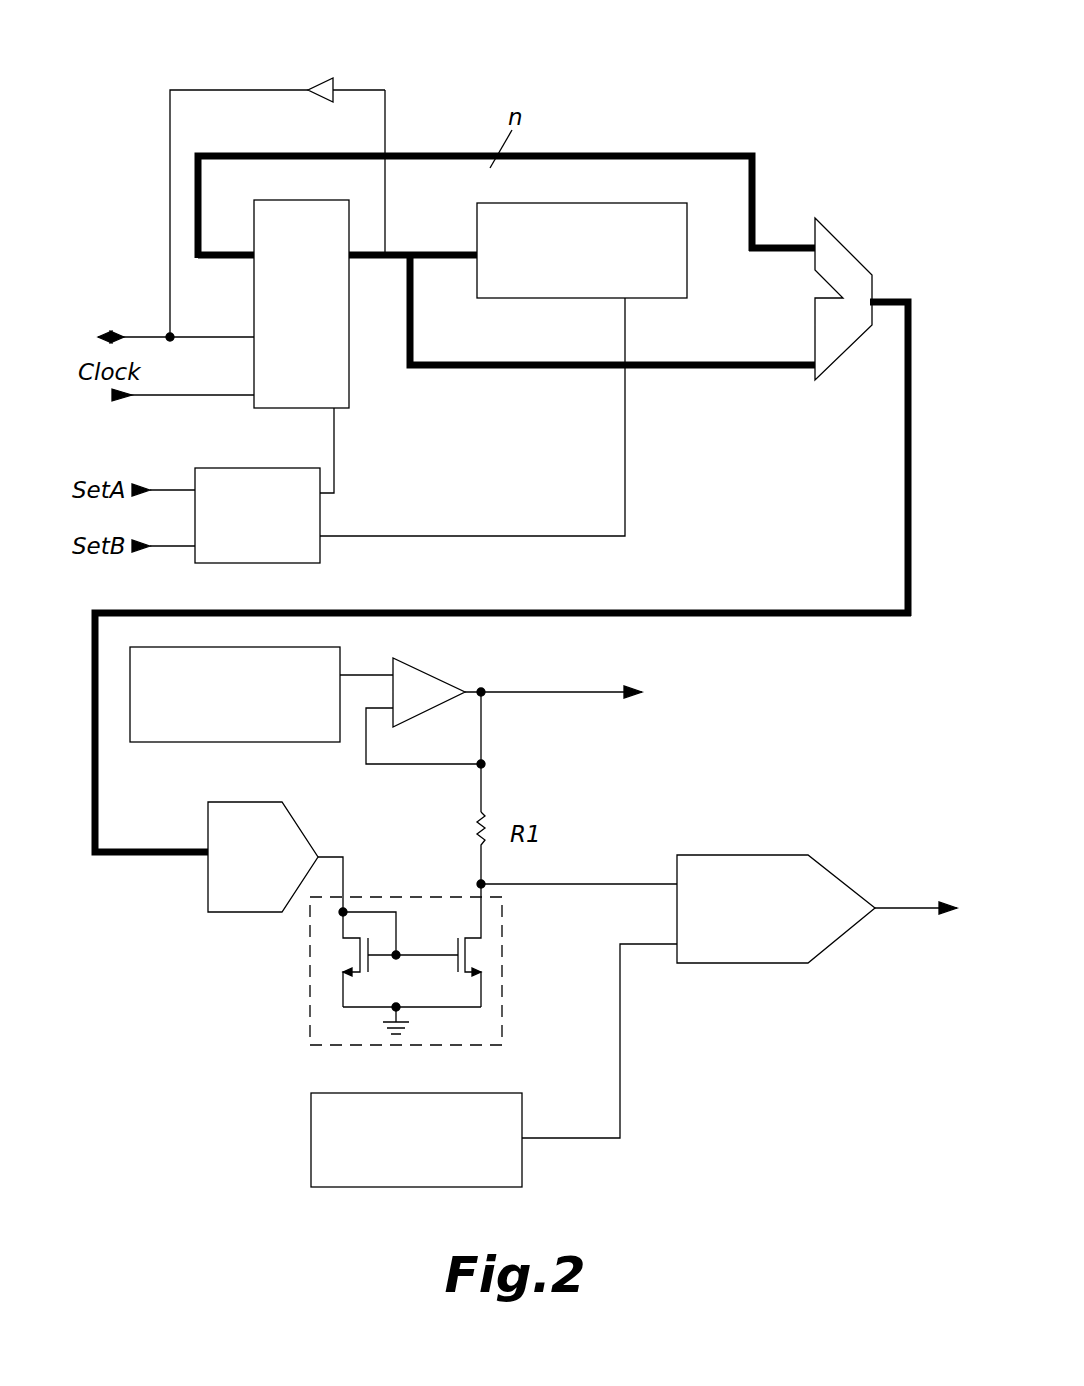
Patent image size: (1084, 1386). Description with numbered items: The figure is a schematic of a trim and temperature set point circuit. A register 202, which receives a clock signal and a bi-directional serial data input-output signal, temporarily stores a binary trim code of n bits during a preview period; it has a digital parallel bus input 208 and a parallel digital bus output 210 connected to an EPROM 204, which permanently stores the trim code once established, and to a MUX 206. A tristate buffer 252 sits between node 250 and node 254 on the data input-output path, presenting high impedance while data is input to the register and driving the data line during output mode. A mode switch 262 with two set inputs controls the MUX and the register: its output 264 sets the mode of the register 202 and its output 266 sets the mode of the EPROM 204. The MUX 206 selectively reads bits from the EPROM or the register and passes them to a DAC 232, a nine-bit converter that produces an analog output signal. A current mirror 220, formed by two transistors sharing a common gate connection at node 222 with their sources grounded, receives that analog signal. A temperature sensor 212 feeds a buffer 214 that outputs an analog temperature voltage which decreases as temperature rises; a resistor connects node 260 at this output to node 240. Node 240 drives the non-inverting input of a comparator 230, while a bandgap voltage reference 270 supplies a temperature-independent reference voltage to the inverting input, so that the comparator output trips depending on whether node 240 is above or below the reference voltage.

The register 202 is at (350, 370).
The EPROM 204 is at (690, 253).
The MUX 206 is at (828, 228).
The digital parallel bus input 208 is at (204, 254).
The parallel digital bus output 210 is at (350, 258).
The temperature sensor 212 is at (158, 742).
The buffer 214 is at (425, 668).
The current mirror 220 is at (454, 964).
The node 222 is at (396, 948).
The comparator 230 is at (740, 855).
The DAC 232 is at (296, 818).
The node 240 is at (486, 886).
The node 250 is at (387, 245).
The tristate buffer 252 is at (325, 78).
The node 254 is at (172, 332).
The node 260 is at (484, 764).
The mode switch 262 is at (240, 468).
The output 264 is at (336, 470).
The output 266 is at (628, 470).
The bandgap voltage reference 270 is at (497, 1093).